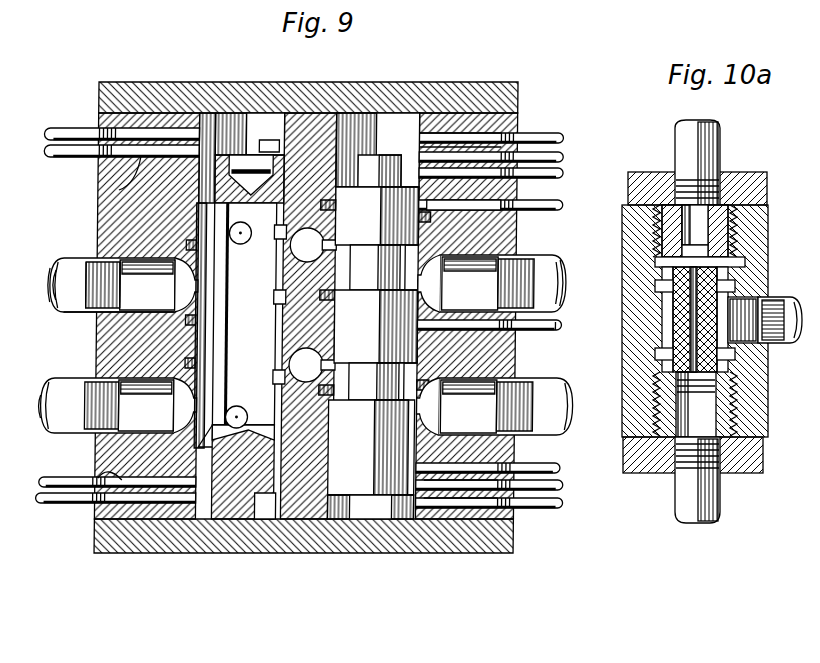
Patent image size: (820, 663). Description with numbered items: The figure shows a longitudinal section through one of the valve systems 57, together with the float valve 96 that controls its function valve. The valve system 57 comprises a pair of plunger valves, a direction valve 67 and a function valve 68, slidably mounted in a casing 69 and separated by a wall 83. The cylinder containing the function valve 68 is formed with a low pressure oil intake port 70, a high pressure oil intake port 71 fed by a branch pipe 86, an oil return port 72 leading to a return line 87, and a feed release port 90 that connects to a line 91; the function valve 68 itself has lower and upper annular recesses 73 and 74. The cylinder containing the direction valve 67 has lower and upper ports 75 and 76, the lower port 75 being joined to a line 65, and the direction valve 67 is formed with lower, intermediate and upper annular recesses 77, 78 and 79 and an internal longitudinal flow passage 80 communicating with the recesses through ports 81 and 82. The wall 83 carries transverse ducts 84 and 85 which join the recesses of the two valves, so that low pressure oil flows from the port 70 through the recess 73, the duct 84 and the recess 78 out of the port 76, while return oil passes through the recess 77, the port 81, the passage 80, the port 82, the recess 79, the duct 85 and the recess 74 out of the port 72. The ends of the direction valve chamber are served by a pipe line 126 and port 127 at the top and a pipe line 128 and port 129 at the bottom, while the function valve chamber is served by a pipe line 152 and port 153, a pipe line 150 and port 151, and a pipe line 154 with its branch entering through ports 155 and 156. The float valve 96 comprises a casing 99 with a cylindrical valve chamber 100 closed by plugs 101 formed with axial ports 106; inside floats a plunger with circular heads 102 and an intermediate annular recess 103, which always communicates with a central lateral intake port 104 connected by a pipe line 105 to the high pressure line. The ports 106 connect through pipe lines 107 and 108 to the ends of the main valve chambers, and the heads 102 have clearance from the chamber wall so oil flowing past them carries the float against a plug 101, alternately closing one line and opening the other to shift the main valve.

In FIG. 9, the valve system 57 is at (240, 96).
In FIG. 9, the wall 83 is at (308, 125).
In FIG. 9, the port 153 is at (447, 138).
In FIG. 9, the casing 69 is at (478, 158).
In FIG. 9, the port 155 is at (506, 133).
In FIG. 9, the pipe line 107 is at (73, 134).
In FIG. 10A, the pipe line 107 is at (680, 162).
In FIG. 9, the pipe line 152 is at (562, 157).
In FIG. 9, the pipe line 154 is at (565, 175).
In FIG. 9, the line 91 is at (563, 205).
In FIG. 9, the feed release port 90 is at (490, 210).
In FIG. 9, the return line 87 is at (548, 270).
In FIG. 9, the pipe line 126 is at (65, 152).
In FIG. 9, the port 127 is at (118, 190).
In FIG. 9, the upper annular recess 79 is at (198, 226).
In FIG. 9, the plug 101 is at (3, 213).
In FIG. 10A, the plug 101 is at (662, 235).
In FIG. 9, the axial port 106 is at (3, 230).
In FIG. 10A, the axial port 106 is at (706, 230).
In FIG. 9, the casing 99 is at (3, 246).
In FIG. 10A, the casing 99 is at (628, 254).
In FIG. 9, the valve chamber 100 is at (3, 262).
In FIG. 10A, the valve chamber 100 is at (662, 278).
In FIG. 9, the annular recess 103 is at (3, 309).
In FIG. 10A, the annular recess 103 is at (665, 327).
In FIG. 9, the upper port 76 is at (124, 285).
In FIG. 9, the intermediate annular recess 78 is at (200, 345).
In FIG. 9, the lower port 75 is at (118, 405).
In FIG. 9, the line 65 is at (73, 425).
In FIG. 9, the lower annular recess 77 is at (190, 447).
In FIG. 9, the port 129 is at (100, 470).
In FIG. 9, the pipe line 128 is at (45, 482).
In FIG. 9, the pipe line 108 is at (60, 503).
In FIG. 10A, the pipe line 108 is at (712, 494).
In FIG. 9, the direction valve 67 is at (238, 500).
In FIG. 9, the port 82 is at (241, 240).
In FIG. 9, the internal longitudinal flow passage 80 is at (248, 361).
In FIG. 9, the port 81 is at (240, 408).
In FIG. 9, the transverse duct 85 is at (313, 245).
In FIG. 9, the transverse duct 84 is at (312, 365).
In FIG. 9, the upper annular recess 74 is at (340, 257).
In FIG. 9, the lower annular recess 73 is at (338, 378).
In FIG. 9, the function valve 68 is at (370, 459).
In FIG. 9, the oil return port 72 is at (492, 283).
In FIG. 9, the low pressure oil intake port 70 is at (494, 406).
In FIG. 9, the high pressure oil intake port 71 is at (495, 330).
In FIG. 9, the branch pipe 86 is at (556, 332).
In FIG. 9, the port 156 is at (515, 462).
In FIG. 9, the port 151 is at (522, 482).
In FIG. 9, the pipe line 150 is at (566, 486).
In FIG. 10A, the float valve 96 is at (765, 226).
In FIG. 10A, the circular head 102 is at (735, 285).
In FIG. 10A, the central lateral intake port 104 is at (772, 297).
In FIG. 10A, the pipe line 105 is at (780, 320).